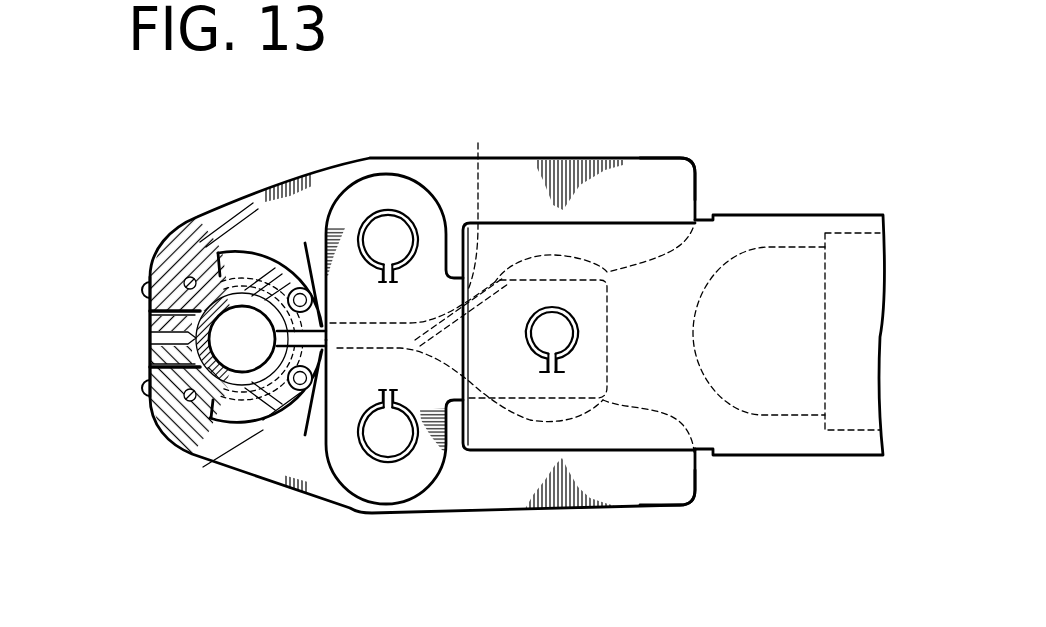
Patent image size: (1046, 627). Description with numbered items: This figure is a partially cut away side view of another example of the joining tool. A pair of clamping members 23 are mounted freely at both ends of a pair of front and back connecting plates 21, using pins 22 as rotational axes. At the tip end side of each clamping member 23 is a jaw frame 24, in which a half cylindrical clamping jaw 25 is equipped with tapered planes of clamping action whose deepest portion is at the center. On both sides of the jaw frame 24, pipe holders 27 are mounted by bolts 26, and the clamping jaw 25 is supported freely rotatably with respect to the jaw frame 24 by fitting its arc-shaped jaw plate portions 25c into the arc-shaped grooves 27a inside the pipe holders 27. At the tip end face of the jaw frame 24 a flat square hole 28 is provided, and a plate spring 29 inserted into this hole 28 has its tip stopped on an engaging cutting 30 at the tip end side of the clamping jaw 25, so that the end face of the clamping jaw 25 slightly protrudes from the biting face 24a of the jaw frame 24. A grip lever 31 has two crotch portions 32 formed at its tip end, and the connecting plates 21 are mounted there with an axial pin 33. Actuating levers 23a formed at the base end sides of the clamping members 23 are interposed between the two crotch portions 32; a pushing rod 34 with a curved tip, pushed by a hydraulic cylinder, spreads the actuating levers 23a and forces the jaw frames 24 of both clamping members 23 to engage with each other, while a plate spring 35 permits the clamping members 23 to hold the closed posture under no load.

The connecting plate 21 is at (406, 188).
The pin 22 is at (380, 248).
The clamping member 23 is at (538, 158).
The actuating lever 23a is at (683, 178).
The jaw frame 24 is at (205, 262).
The biting face 24a is at (150, 338).
The half cylindrical clamping jaw 25 is at (153, 317).
The arc-shaped jaw plate portion 25c is at (219, 253).
The bolt 26 is at (303, 288).
The pipe holder 27 is at (240, 253).
The arc-shaped groove 27a is at (265, 285).
The flat square hole 28 is at (144, 290).
The plate spring 29 is at (156, 308).
The engaging cutting 30 is at (187, 278).
The grip lever 31 is at (813, 222).
The crotch portion 32 is at (620, 235).
The axial pin 33 is at (567, 338).
The pushing rod 34 is at (763, 407).
The plate spring 35 is at (512, 283).